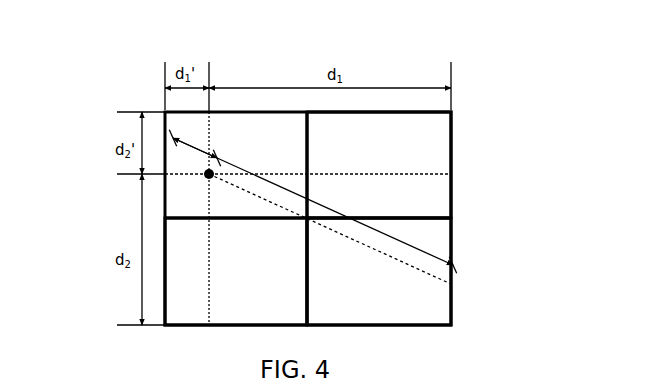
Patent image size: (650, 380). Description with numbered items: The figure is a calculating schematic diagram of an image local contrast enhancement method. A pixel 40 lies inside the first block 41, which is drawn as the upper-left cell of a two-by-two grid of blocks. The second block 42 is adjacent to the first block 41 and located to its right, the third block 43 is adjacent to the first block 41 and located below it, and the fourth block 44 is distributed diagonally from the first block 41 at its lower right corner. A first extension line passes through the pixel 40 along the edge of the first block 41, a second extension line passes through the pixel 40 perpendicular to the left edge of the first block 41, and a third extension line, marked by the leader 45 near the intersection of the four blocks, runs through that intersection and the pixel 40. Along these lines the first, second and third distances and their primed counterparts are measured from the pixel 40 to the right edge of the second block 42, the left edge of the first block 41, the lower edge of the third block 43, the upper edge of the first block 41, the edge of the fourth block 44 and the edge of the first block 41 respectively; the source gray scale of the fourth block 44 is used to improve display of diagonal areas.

The pixel 40 is at (215, 157).
The first block 41 is at (200, 197).
The second block 42 is at (407, 161).
The third block 43 is at (178, 272).
The fourth block 44 is at (413, 300).
The diagonal line 45 is at (312, 216).